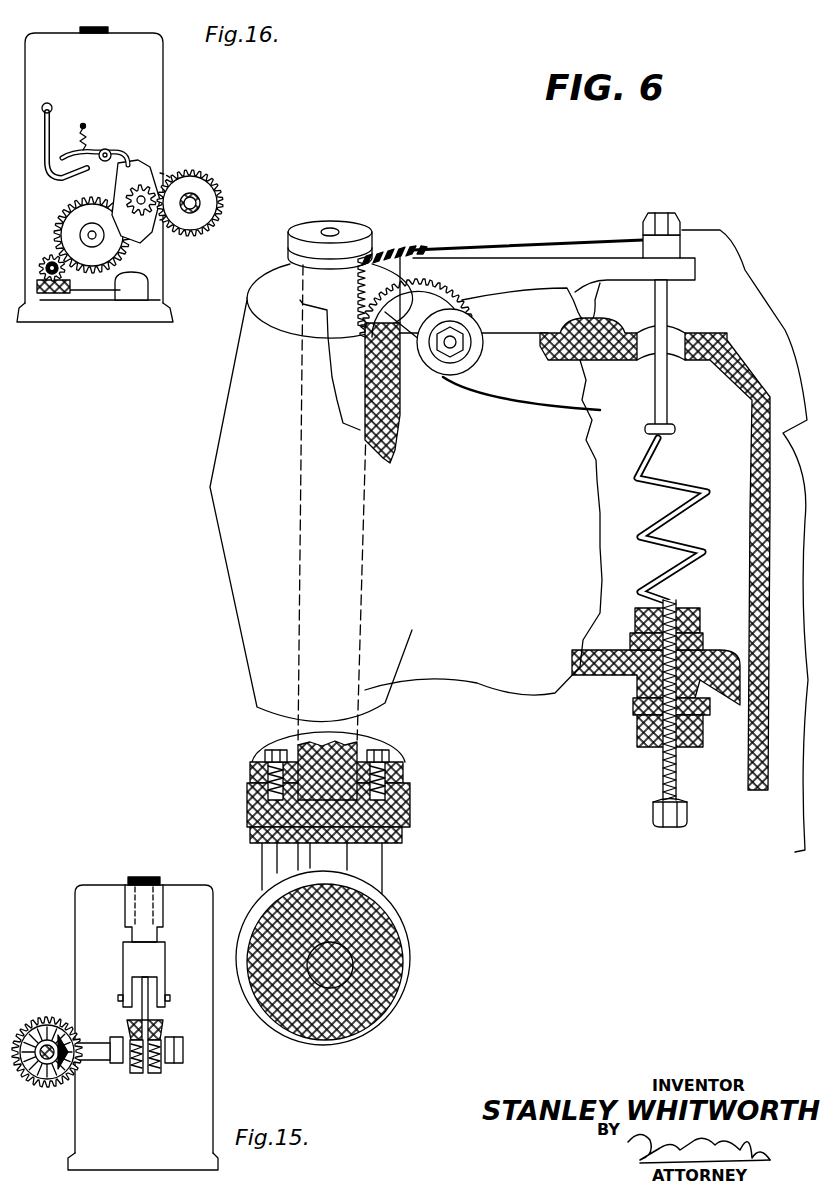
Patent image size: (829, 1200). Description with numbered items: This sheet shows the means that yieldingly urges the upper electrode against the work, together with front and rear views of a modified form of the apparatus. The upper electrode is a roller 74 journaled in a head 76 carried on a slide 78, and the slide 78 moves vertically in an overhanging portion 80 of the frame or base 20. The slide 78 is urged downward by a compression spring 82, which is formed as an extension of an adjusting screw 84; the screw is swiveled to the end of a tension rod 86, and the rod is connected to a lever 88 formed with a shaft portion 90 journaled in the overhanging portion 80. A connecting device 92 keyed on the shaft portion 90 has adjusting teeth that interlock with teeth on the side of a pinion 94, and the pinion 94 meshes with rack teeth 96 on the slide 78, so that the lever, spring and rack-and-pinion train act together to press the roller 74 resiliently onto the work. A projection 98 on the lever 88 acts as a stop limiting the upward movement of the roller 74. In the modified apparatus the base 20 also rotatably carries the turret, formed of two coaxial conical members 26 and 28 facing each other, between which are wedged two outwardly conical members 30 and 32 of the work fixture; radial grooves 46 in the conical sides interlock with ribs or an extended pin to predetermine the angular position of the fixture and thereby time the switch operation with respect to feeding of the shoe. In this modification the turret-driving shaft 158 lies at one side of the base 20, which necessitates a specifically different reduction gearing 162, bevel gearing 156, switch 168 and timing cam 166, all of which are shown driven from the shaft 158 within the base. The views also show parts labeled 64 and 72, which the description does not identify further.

In FIG. 16, the base or frame 20 is at (143, 86).
In FIG. 6, the base or frame 20 is at (512, 665).
In FIG. 15, the base or frame 20 is at (198, 945).
In FIG. 15, the coaxial conical member 26 is at (130, 1070).
In FIG. 15, the coaxial conical member 28 is at (158, 1073).
In FIG. 15, the outwardly conical member 30 is at (160, 1020).
In FIG. 15, the outwardly conical member 32 is at (130, 1022).
In FIG. 15, the radial grooves 46 is at (183, 1052).
In FIG. 16, the boss 64 is at (138, 286).
In FIG. 16, the lever 72 is at (52, 120).
In FIG. 6, the roller 74 is at (382, 943).
In FIG. 6, the head 76 is at (288, 828).
In FIG. 15, the head 76 is at (208, 868).
In FIG. 6, the slide 78 is at (340, 228).
In FIG. 6, the overhanging portion 80 is at (252, 542).
In FIG. 6, the compression spring 82 is at (657, 518).
In FIG. 6, the adjusting screw 84 is at (665, 760).
In FIG. 6, the tension rod 86 is at (660, 312).
In FIG. 6, the lever 88 is at (508, 275).
In FIG. 6, the shaft portion 90 is at (450, 392).
In FIG. 6, the connecting device 92 is at (425, 293).
In FIG. 6, the pinion 94 is at (392, 256).
In FIG. 6, the rack teeth 96 is at (363, 338).
In FIG. 6, the projection 98 is at (587, 307).
In FIG. 15, the bevel gearing 156 is at (58, 1033).
In FIG. 16, the turret-driving shaft 158 is at (195, 200).
In FIG. 15, the turret-driving shaft 158 is at (40, 1075).
In FIG. 16, the reduction gearing 162 is at (197, 221).
In FIG. 16, the timing cam 166 is at (143, 175).
In FIG. 16, the switch 168 is at (84, 153).